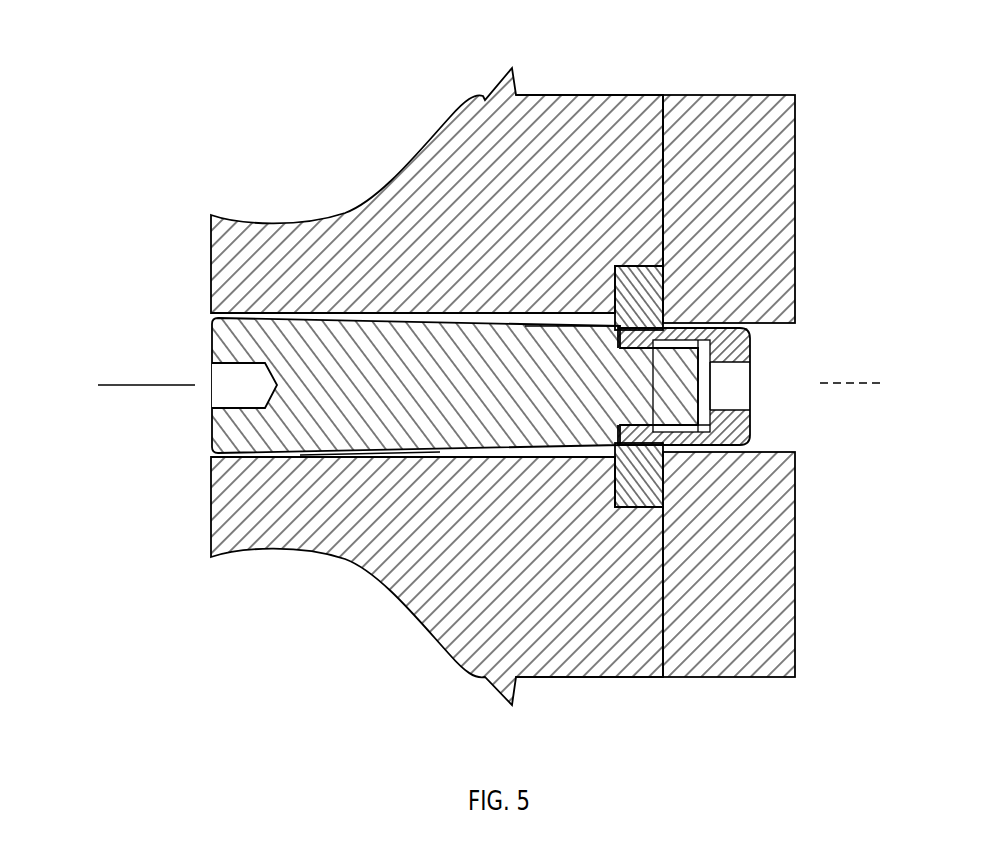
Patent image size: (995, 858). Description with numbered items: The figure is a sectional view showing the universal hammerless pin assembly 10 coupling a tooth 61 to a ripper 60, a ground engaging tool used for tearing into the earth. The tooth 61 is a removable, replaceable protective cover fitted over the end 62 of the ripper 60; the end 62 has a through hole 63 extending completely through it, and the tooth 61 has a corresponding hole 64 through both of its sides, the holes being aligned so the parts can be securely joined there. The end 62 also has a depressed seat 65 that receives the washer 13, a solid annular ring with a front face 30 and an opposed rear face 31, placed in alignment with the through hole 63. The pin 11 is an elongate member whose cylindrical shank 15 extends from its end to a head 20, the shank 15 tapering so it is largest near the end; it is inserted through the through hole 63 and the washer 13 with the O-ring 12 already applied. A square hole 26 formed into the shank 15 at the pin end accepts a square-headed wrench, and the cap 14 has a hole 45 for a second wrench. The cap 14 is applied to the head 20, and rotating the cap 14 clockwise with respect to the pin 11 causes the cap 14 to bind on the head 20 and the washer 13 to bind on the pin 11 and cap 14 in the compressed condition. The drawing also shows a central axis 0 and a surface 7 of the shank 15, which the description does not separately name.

The central axis 0 is at (132, 384).
The tube outer surface 7 is at (372, 448).
The universal hammerless pin assembly 10 is at (362, 311).
The pin 11 is at (260, 462).
The O-ring 12 is at (631, 340).
The washer 13 is at (640, 260).
The cap 14 is at (757, 343).
The shank 15 is at (520, 448).
The head 20 is at (688, 437).
The square hole 26 is at (212, 389).
The front face 30 is at (664, 495).
The rear face 31 is at (613, 492).
The hole 45 is at (742, 385).
The ripper 60 is at (641, 95).
The tooth 61 is at (790, 95).
The end 62 is at (664, 120).
The through hole 63 is at (555, 326).
The hole 64 is at (772, 430).
The depressed seat 65 is at (645, 508).